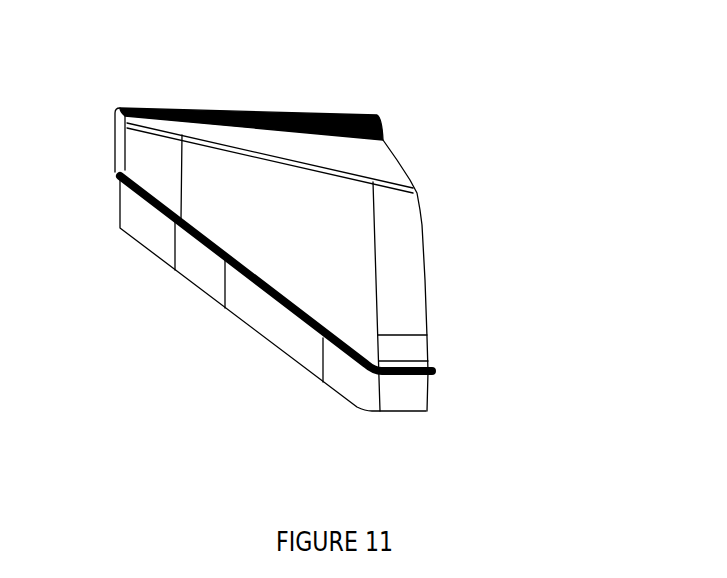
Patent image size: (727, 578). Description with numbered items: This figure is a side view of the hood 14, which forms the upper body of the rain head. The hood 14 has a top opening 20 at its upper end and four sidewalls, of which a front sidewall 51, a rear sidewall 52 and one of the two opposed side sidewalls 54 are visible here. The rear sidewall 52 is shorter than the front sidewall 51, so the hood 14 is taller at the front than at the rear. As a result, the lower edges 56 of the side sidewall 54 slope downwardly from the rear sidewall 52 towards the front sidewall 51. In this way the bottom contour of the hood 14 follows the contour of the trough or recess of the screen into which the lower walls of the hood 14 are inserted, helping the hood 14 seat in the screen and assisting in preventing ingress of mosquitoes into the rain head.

The hood 14 is at (535, 171).
The top opening 20 is at (283, 103).
The front sidewall 51 is at (431, 277).
The rear sidewall 52 is at (115, 205).
The side sidewall 54 is at (307, 215).
The lower edges 56 is at (246, 335).